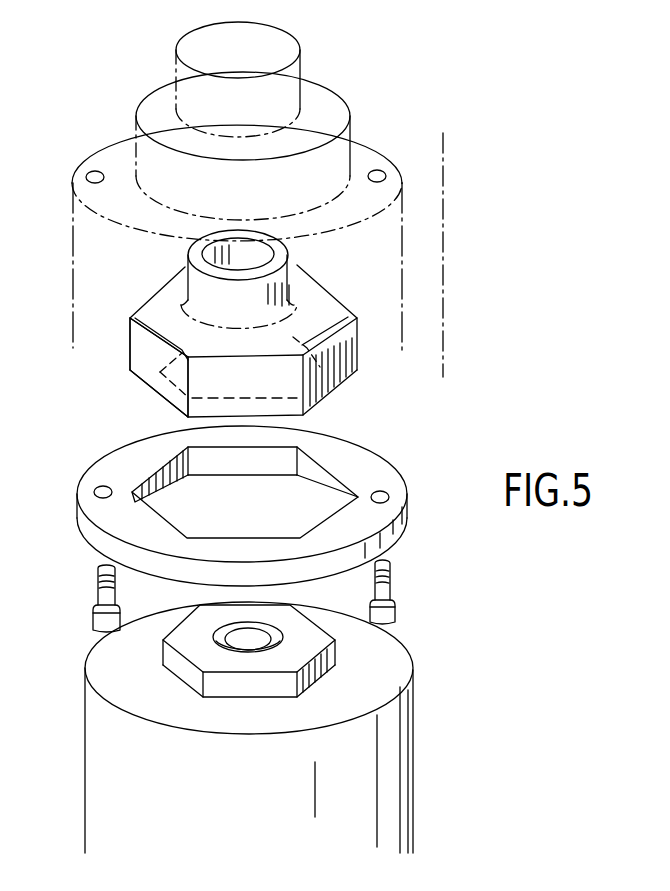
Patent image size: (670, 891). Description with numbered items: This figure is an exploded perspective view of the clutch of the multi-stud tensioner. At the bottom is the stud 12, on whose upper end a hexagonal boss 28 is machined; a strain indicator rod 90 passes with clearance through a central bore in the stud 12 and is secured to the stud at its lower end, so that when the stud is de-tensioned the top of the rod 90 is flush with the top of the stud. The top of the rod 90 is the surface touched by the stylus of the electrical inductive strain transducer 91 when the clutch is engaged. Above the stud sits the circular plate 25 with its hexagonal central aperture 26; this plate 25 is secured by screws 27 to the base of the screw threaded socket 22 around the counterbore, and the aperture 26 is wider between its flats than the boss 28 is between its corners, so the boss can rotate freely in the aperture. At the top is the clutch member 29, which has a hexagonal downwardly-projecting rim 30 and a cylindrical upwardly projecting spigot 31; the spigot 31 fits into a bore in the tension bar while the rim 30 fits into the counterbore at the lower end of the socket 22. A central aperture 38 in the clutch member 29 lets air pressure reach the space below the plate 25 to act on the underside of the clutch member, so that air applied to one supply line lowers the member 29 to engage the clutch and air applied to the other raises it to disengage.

The stud 12 is at (382, 793).
The screw threaded socket 22 is at (402, 238).
The circular plate 25 is at (370, 477).
The hexagonal central aperture 26 is at (170, 520).
The screws 27 is at (98, 590).
The hexagonal boss 28 is at (305, 642).
The clutch member 29 is at (336, 352).
The hexagonal downwardly-projecting rim 30 is at (152, 378).
The cylindrical upwardly projecting spigot 31 is at (265, 300).
The central aperture 38 is at (245, 255).
The strain indicator rod 90 is at (253, 645).
The electrical inductive strain transducer 91 is at (255, 643).